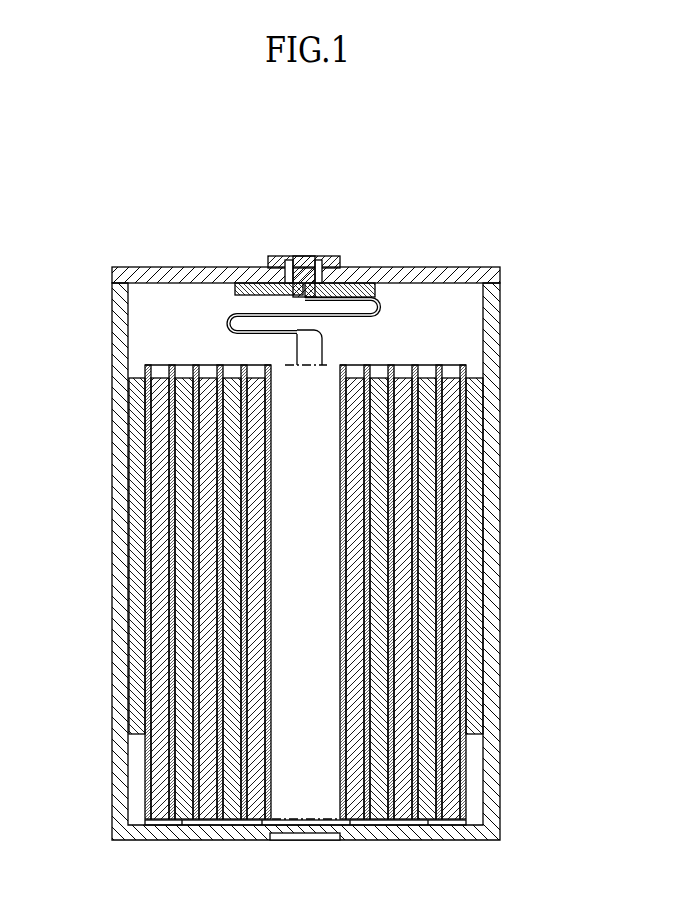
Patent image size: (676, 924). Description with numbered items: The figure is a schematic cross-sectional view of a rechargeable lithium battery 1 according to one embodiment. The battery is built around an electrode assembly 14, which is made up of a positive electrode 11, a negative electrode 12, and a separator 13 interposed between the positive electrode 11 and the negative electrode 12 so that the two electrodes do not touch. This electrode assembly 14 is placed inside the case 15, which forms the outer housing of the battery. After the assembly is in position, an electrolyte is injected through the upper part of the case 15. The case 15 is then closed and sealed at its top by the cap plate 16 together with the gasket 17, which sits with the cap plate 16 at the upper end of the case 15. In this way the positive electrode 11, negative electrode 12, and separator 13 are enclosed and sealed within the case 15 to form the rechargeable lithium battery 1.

The rechargeable lithium battery 1 is at (319, 190).
The positive electrode 11 is at (452, 760).
The negative electrode 12 is at (187, 780).
The separator 13 is at (170, 752).
The electrode assembly 14 is at (298, 520).
The case 15 is at (117, 322).
The cap plate 16 is at (183, 275).
The gasket 17 is at (271, 257).